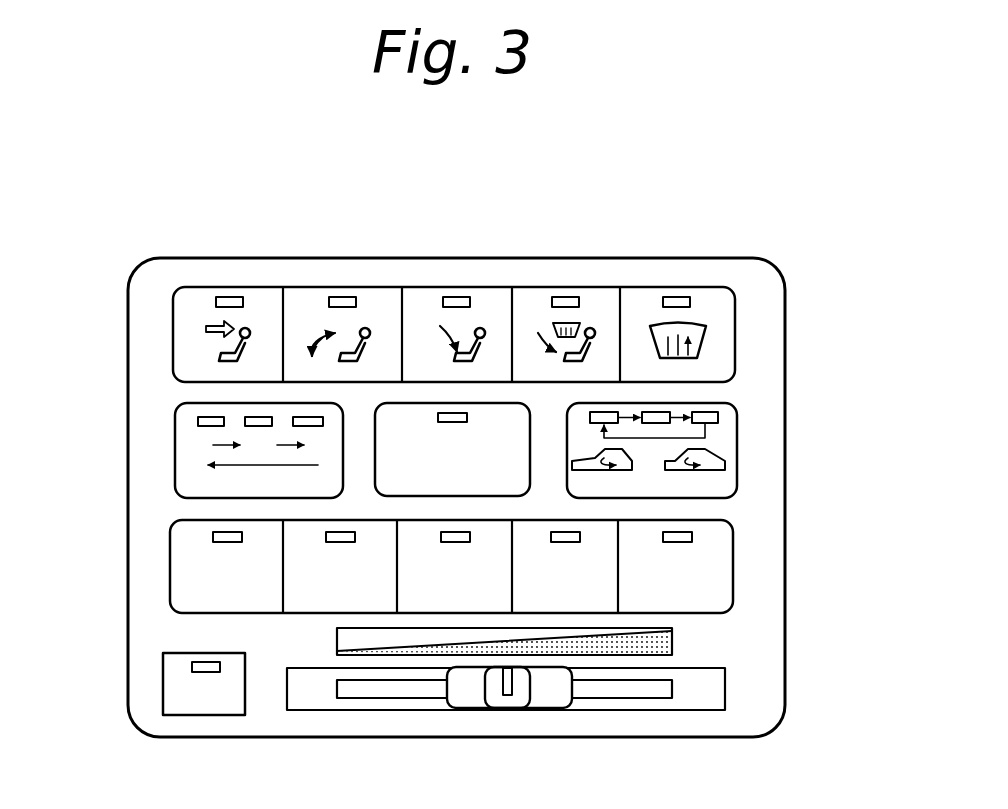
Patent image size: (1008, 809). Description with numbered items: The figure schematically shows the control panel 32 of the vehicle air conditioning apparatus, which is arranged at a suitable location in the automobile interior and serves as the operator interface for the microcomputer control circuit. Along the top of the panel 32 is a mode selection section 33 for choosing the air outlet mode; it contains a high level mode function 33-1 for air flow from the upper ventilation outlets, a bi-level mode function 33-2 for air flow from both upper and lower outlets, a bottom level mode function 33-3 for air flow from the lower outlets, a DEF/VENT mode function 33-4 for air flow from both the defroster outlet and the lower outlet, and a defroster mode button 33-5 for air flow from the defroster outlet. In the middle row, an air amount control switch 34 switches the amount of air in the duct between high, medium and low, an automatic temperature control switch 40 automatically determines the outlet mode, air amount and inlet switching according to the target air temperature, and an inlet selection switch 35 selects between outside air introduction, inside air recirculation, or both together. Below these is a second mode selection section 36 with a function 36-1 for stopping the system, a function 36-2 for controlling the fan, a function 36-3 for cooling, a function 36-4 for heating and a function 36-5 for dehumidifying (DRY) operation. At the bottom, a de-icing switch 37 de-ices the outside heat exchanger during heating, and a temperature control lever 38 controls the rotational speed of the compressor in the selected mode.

The control panel 32 is at (618, 232).
The mode selection section 33 is at (667, 272).
The high level mode function 33-1 is at (192, 292).
The bi-level mode function 33-2 is at (308, 292).
The bottom level mode function 33-3 is at (482, 297).
The DEF/VENT mode function 33-4 is at (542, 293).
The defroster mode button 33-5 is at (724, 297).
The automatic temperature control switch 40 is at (413, 403).
The air amount control switch 34 is at (176, 430).
The inlet selection switch 35 is at (724, 437).
The mode selection section 36 is at (742, 540).
The stop function 36-1 is at (176, 600).
The fan function 36-2 is at (297, 610).
The cooling function 36-3 is at (415, 607).
The heating function 36-4 is at (616, 598).
The dehumidifying function 36-5 is at (722, 593).
The de-icing switch 37 is at (165, 670).
The temperature control lever 38 is at (515, 700).